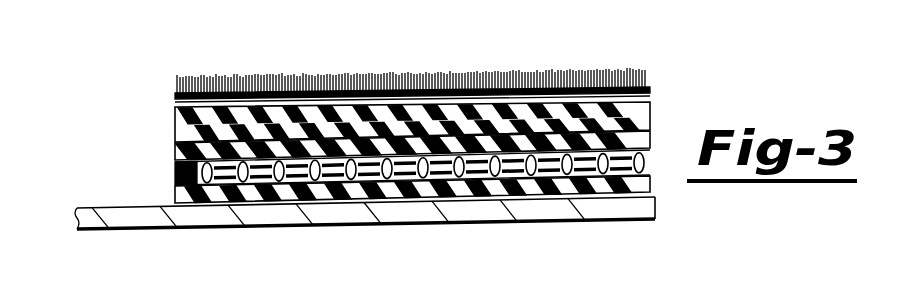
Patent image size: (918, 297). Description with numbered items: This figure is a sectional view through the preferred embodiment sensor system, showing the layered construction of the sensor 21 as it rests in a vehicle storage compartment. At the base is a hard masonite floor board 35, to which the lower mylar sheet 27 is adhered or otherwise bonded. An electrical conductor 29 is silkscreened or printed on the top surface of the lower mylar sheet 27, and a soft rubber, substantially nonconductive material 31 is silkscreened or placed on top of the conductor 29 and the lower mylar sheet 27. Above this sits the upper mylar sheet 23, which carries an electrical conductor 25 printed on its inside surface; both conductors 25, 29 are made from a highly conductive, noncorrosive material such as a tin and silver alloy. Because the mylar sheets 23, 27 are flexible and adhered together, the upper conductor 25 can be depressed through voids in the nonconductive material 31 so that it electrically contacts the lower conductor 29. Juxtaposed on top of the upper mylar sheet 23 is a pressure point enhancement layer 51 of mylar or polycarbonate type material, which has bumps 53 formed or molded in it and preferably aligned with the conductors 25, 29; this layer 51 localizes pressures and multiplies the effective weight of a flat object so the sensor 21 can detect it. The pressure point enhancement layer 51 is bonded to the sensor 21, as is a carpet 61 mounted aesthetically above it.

The sensor 21 is at (152, 128).
The upper mylar sheet 23 is at (425, 140).
The electrical conductor 25 is at (174, 157).
The lower mylar sheet 27 is at (438, 188).
The electrical conductor 29 is at (176, 180).
The nonconductive material 31 is at (655, 157).
The masonite floor board 35 is at (133, 213).
The pressure point enhancement layer 51 is at (175, 113).
The bumps 53 is at (652, 128).
The carpet 61 is at (240, 76).